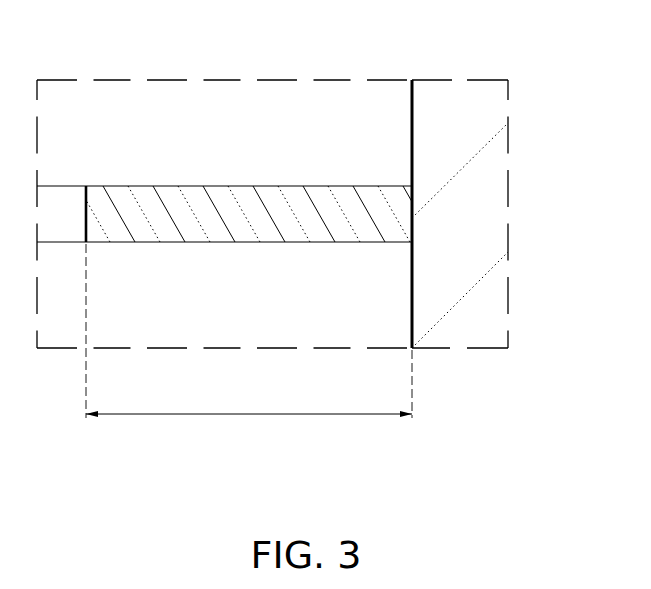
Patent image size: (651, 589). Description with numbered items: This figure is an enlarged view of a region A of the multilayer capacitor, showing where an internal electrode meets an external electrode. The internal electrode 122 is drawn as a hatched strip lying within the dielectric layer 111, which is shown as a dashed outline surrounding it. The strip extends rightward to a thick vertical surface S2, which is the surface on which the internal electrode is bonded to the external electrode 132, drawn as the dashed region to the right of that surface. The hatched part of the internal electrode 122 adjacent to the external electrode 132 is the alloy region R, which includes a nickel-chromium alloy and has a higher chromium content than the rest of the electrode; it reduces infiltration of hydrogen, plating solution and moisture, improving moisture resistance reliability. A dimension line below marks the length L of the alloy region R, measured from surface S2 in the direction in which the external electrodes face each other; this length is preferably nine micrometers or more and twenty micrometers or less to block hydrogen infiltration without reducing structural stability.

The dielectric layer 111 is at (347, 97).
The internal electrode 122 is at (68, 202).
The external electrode 132 is at (457, 97).
The alloy region R is at (233, 205).
The surface S2 is at (416, 291).
The length of the alloy region L is at (249, 345).
The region A is at (273, 501).